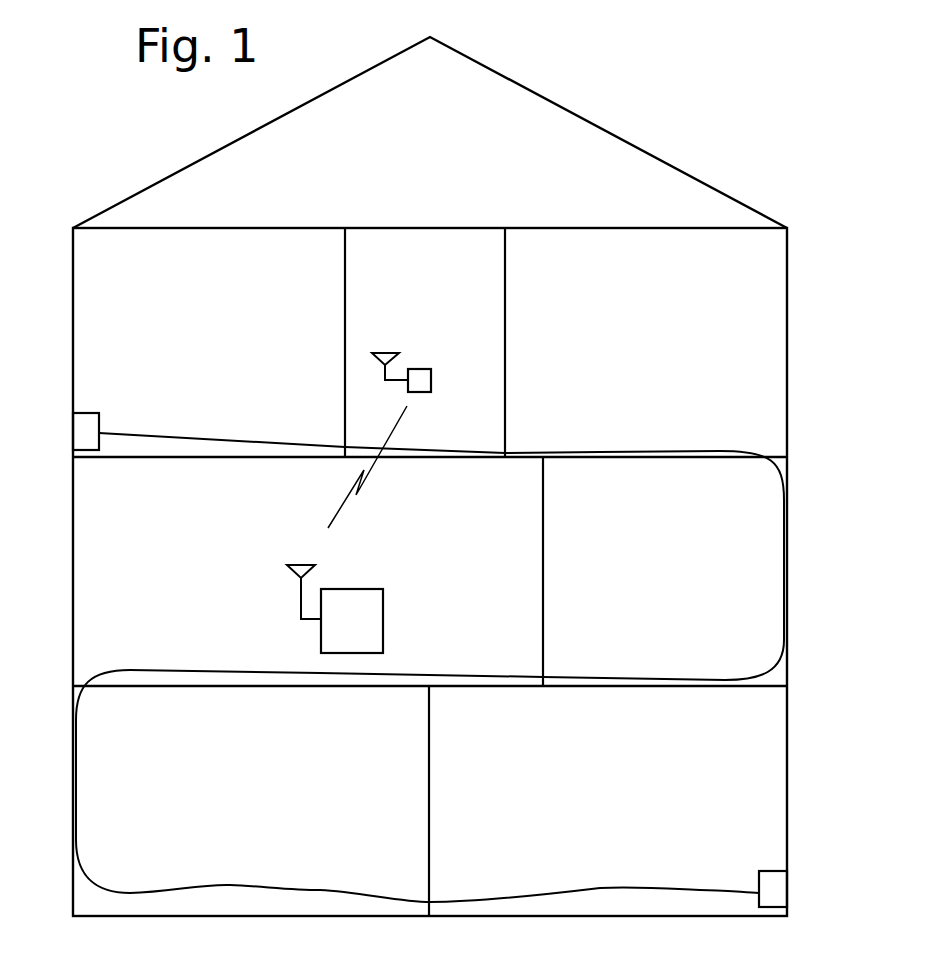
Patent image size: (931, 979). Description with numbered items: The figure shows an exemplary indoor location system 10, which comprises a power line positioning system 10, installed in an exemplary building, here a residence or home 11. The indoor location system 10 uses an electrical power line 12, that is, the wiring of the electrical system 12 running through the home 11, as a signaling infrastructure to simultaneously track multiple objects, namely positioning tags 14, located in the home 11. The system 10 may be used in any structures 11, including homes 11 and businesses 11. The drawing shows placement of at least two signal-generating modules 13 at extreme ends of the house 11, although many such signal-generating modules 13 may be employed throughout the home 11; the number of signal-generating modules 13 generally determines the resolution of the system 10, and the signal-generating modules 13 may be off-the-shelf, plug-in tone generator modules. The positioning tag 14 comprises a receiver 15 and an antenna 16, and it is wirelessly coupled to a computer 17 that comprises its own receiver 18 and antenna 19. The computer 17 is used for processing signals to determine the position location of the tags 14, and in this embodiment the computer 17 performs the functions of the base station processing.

The indoor location system 10 is at (641, 52).
The home 11 is at (788, 353).
The electrical power line 12 is at (272, 440).
The signal-generating module 13 is at (100, 413).
The positioning tag 14 is at (425, 340).
The receiver 15 is at (433, 375).
The antenna 16 is at (383, 352).
The computer 17 is at (356, 583).
The receiver 18 is at (385, 608).
The antenna 19 is at (293, 563).